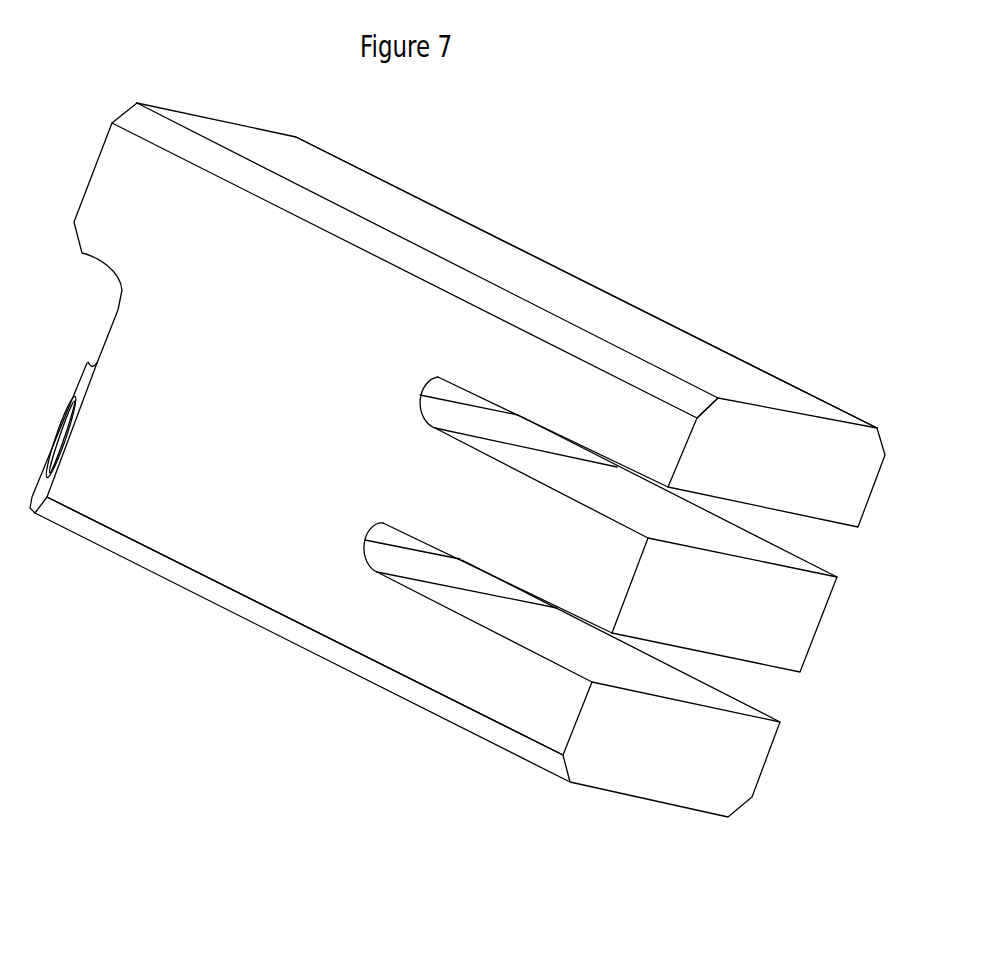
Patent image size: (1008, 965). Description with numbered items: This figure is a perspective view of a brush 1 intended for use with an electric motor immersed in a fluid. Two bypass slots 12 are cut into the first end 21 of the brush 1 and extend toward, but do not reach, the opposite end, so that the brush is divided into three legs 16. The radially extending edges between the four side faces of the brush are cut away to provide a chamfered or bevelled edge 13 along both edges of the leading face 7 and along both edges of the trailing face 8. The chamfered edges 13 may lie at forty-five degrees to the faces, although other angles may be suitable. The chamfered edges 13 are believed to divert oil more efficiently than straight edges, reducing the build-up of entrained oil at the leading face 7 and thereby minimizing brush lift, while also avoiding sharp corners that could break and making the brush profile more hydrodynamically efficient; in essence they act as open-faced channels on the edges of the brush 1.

The brush 1 is at (570, 180).
The leading face 7 is at (362, 275).
The trailing face 8 is at (698, 337).
The bypass slots 12 is at (750, 683).
The chamfered edge 13 is at (467, 282).
The legs 16 is at (583, 305).
The first end 21 is at (833, 480).